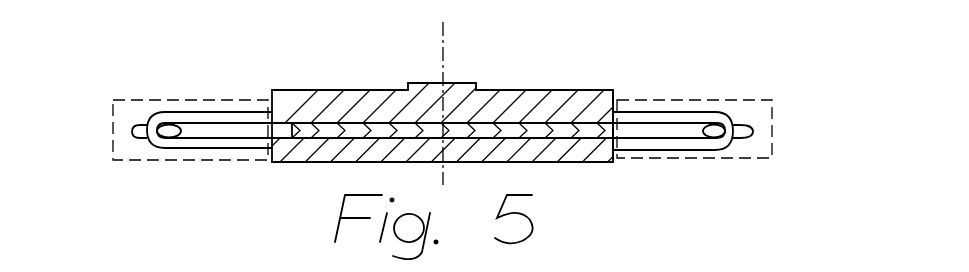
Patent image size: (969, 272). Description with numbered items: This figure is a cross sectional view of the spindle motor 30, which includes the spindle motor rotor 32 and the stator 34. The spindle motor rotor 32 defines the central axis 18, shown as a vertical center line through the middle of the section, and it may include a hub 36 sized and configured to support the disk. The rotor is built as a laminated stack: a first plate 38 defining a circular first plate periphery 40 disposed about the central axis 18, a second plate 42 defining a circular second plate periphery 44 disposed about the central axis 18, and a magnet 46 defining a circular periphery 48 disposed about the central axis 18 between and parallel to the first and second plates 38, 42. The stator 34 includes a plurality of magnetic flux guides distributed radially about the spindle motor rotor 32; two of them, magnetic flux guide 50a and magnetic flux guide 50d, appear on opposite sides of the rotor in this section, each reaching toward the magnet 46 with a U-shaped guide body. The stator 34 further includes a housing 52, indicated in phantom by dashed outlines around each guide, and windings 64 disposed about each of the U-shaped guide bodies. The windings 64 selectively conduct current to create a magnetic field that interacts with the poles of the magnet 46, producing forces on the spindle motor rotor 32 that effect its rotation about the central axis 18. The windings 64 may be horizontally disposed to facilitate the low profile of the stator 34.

The central axis 18 is at (436, 32).
The spindle motor 30 is at (310, 40).
The spindle motor rotor 32 is at (307, 90).
The stator 34 is at (204, 98).
The hub 36 is at (425, 82).
The first plate 38 is at (530, 90).
The first plate periphery 40 is at (621, 88).
The second plate 42 is at (598, 161).
The second plate periphery 44 is at (621, 161).
The magnet 46 is at (565, 128).
The circular periphery 48 is at (600, 129).
The magnetic flux guide 50a is at (722, 112).
The magnetic flux guide 50d is at (177, 116).
The housing 52 is at (716, 164).
The windings 64 is at (138, 132).